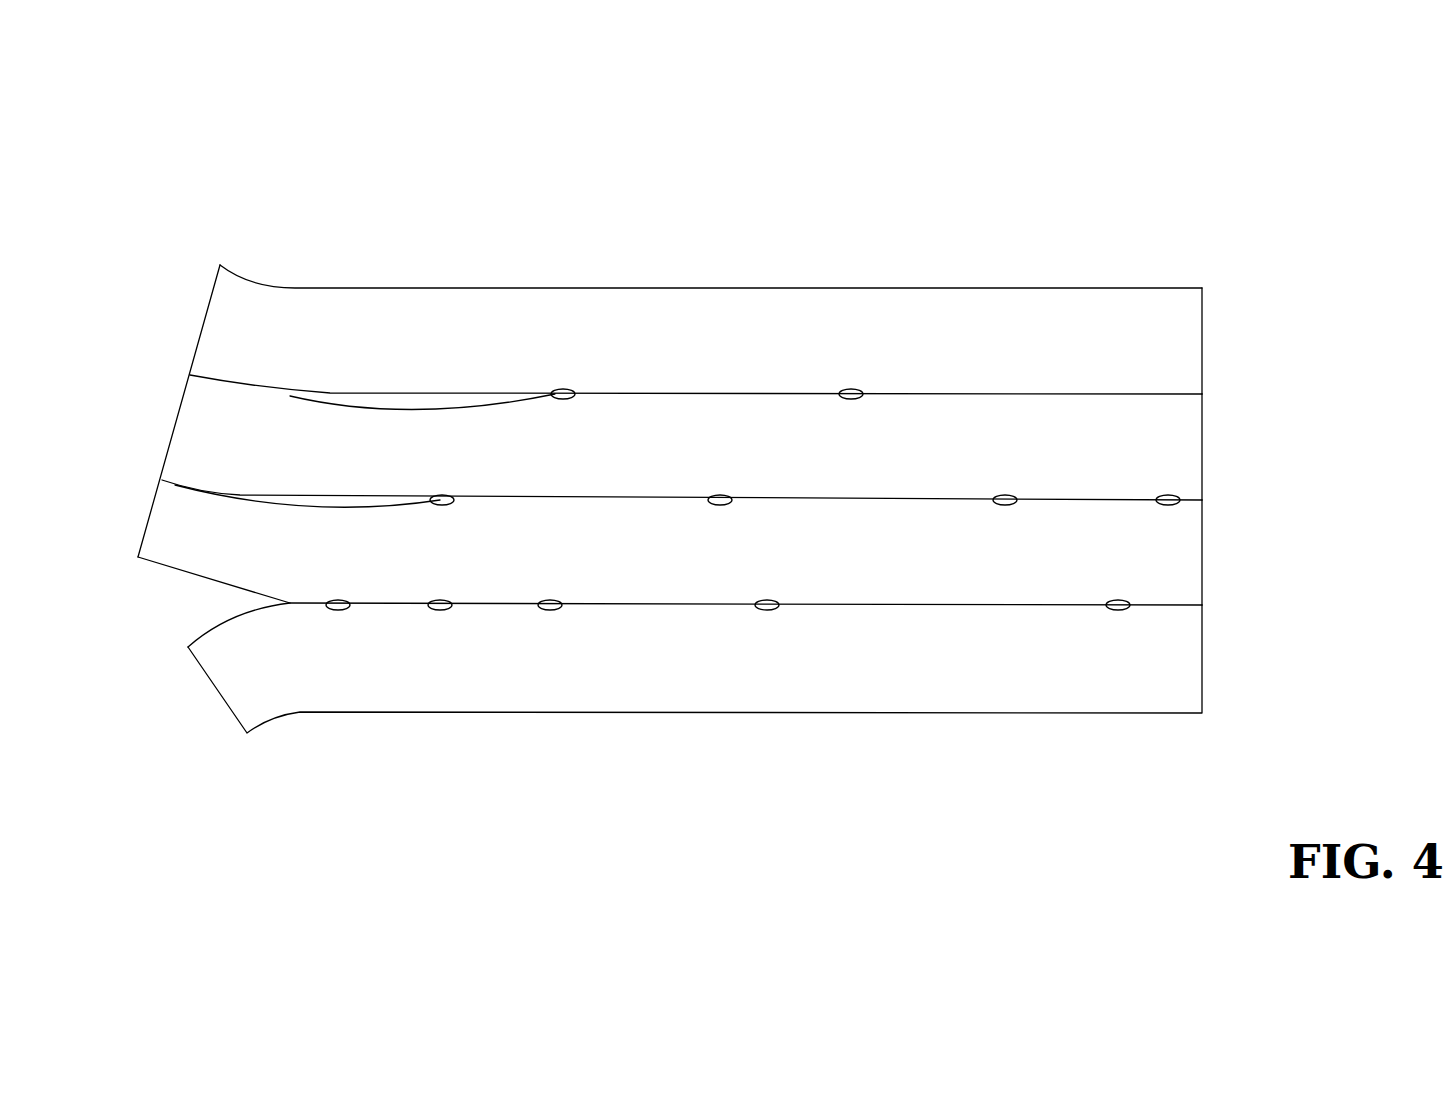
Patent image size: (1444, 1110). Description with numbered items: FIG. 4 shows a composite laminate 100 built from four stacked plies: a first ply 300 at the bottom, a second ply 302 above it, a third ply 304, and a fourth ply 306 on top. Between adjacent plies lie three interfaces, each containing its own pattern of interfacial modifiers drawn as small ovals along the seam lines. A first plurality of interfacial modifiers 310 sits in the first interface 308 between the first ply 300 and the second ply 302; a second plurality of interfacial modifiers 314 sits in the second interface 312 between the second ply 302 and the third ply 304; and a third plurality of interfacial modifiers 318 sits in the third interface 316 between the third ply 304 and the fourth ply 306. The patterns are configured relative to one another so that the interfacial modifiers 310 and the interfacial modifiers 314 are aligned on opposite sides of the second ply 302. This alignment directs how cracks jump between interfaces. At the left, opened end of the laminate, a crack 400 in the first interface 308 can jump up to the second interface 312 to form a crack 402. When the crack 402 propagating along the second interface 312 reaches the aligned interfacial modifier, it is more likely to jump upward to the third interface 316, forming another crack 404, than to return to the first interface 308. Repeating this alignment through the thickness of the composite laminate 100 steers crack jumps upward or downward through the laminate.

The composite laminate 100 is at (711, 409).
The first ply 300 is at (928, 713).
The second ply 302 is at (1202, 568).
The third ply 304 is at (1202, 455).
The fourth ply 306 is at (957, 288).
The first interface 308 is at (963, 602).
The first plurality of interfacial modifiers 310 is at (445, 600).
The second interface 312 is at (948, 497).
The second plurality of interfacial modifiers 314 is at (442, 495).
The third interface 316 is at (1156, 392).
The third plurality of interfacial modifiers 318 is at (567, 389).
The crack 400 is at (195, 622).
The crack 402 is at (318, 497).
The crack 404 is at (420, 396).